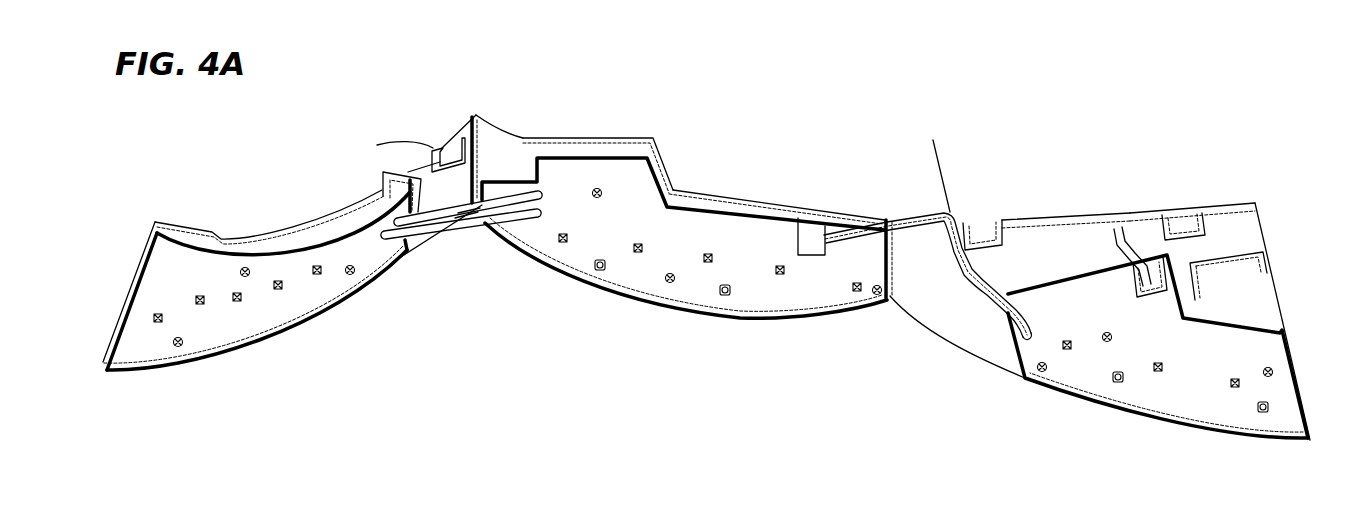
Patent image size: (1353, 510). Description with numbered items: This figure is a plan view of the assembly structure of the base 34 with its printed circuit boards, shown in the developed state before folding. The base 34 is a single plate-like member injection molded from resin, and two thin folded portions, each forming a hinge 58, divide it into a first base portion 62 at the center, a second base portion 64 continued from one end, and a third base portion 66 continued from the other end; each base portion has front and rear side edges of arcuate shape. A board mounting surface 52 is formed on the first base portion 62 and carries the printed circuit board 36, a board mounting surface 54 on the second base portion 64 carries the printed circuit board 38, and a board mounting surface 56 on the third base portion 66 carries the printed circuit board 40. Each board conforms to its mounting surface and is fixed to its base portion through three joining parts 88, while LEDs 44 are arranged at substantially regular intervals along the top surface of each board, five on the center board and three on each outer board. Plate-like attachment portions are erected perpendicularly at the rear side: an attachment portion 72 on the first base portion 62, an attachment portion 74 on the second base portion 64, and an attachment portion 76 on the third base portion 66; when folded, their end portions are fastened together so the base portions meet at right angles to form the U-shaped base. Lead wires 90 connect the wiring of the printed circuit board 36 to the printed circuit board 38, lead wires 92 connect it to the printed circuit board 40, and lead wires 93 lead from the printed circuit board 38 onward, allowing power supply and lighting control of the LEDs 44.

The base 34 is at (1060, 197).
The printed circuit board 36 is at (755, 315).
The printed circuit board 38 is at (1118, 397).
The printed circuit board 40 is at (272, 320).
The LED 44 is at (160, 327).
The board mounting surface 52 is at (690, 205).
The board mounting surface 54 is at (1107, 255).
The board mounting surface 56 is at (313, 243).
The hinge 58 is at (472, 112).
The first base portion 62 is at (740, 210).
The second base portion 64 is at (1033, 237).
The third base portion 66 is at (348, 228).
The attachment portion 72 is at (800, 213).
The attachment portion 74 is at (1233, 258).
The attachment portion 76 is at (373, 177).
The joining part 88 is at (244, 265).
The lead wire 90 is at (1000, 307).
The lead wire 92 is at (508, 217).
The lead wire 93 is at (1137, 262).